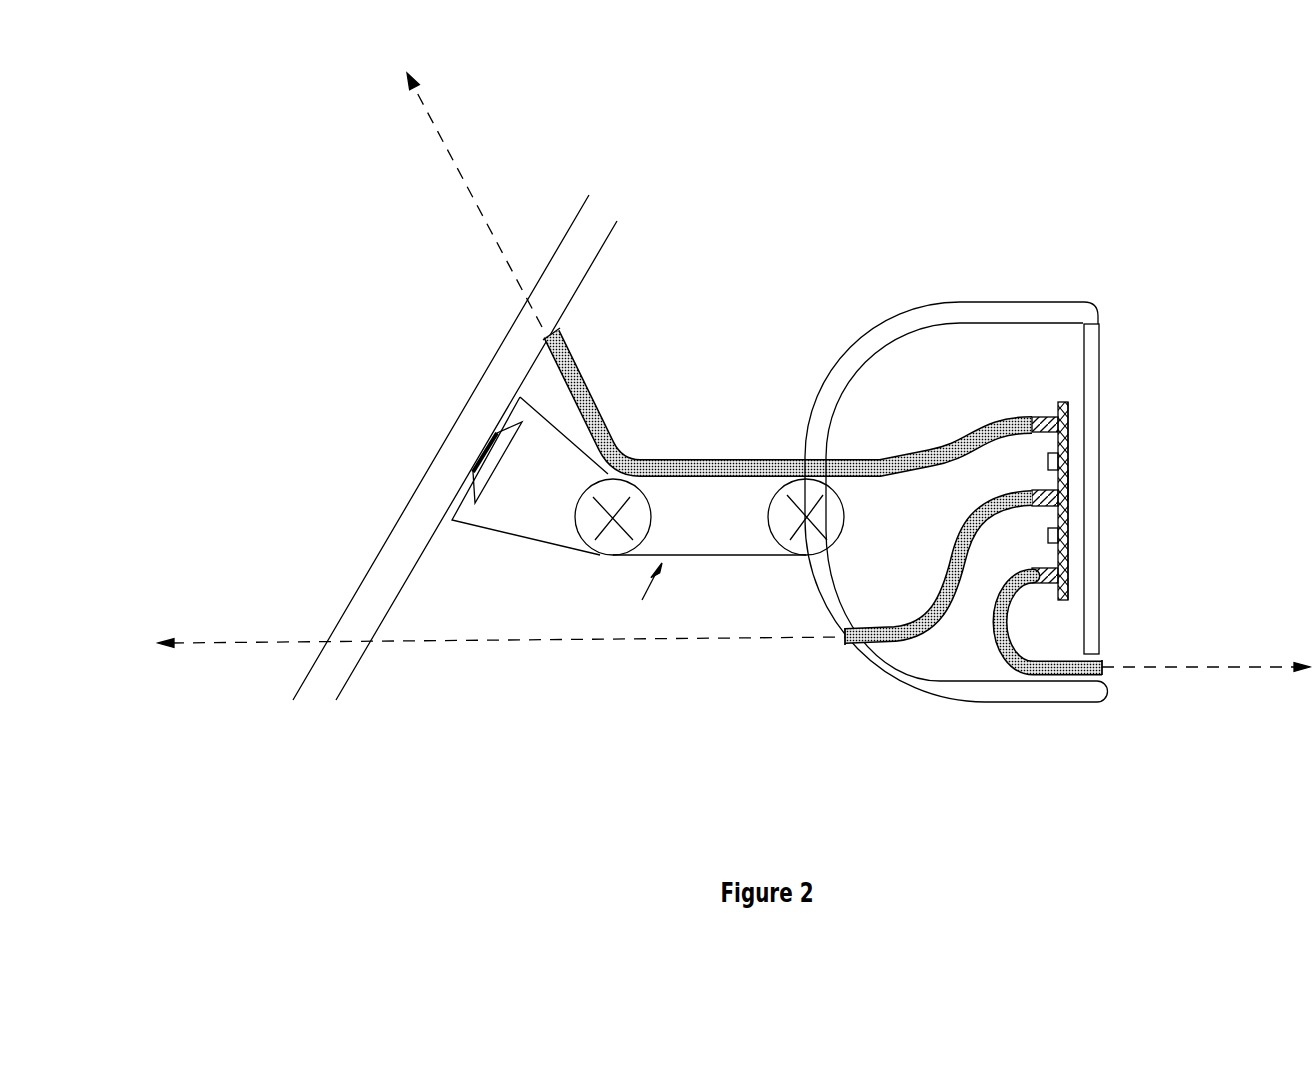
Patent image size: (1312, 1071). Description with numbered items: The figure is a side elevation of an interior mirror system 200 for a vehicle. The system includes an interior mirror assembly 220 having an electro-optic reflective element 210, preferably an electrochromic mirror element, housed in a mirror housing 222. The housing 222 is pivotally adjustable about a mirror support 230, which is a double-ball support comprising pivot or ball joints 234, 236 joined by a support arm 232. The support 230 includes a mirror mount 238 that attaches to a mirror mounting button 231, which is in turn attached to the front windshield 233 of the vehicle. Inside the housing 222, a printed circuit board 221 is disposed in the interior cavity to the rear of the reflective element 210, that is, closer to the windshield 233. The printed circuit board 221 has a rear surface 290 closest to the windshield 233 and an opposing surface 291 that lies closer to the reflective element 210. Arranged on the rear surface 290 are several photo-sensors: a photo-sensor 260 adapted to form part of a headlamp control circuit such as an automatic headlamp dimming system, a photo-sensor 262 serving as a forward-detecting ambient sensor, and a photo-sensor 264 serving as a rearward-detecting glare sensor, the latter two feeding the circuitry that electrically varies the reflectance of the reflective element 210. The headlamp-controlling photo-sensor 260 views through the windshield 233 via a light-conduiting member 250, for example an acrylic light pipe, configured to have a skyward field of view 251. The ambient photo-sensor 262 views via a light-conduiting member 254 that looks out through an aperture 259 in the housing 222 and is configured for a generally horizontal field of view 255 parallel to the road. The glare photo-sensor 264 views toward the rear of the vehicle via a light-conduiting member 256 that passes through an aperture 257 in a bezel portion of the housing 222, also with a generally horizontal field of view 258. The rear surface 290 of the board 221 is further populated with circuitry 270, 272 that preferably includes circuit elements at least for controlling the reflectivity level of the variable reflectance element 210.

The interior mirror system 200 is at (467, 757).
The electro-optic reflective element 210 is at (1092, 372).
The interior mirror assembly 220 is at (1073, 276).
The printed circuit board 221 is at (1068, 486).
The mirror housing 222 is at (918, 306).
The mirror support 230 is at (641, 594).
The mirror mounting button 231 is at (493, 437).
The support arm 232 is at (702, 523).
The front windshield 233 is at (500, 365).
The ball joint 234 is at (810, 533).
The ball joint 236 is at (611, 535).
The mirror mount 238 is at (515, 500).
The light-conduiting member 250 is at (713, 463).
The skyward field of view 251 is at (475, 200).
The light-conduiting member 254 is at (910, 637).
The generally horizontal field of view 255 is at (250, 636).
The light-conduiting member 256 is at (1000, 643).
The aperture 257 is at (1105, 675).
The generally horizontal field of view 258 is at (1212, 596).
The aperture 259 is at (847, 638).
The photo-sensor 260 is at (1036, 418).
The photo-sensor 262 is at (1046, 502).
The photo-sensor 264 is at (1043, 585).
The circuitry 270 is at (1047, 464).
The circuitry 272 is at (1048, 541).
The rear surface 290 is at (1053, 403).
The opposing surface 291 is at (1067, 430).